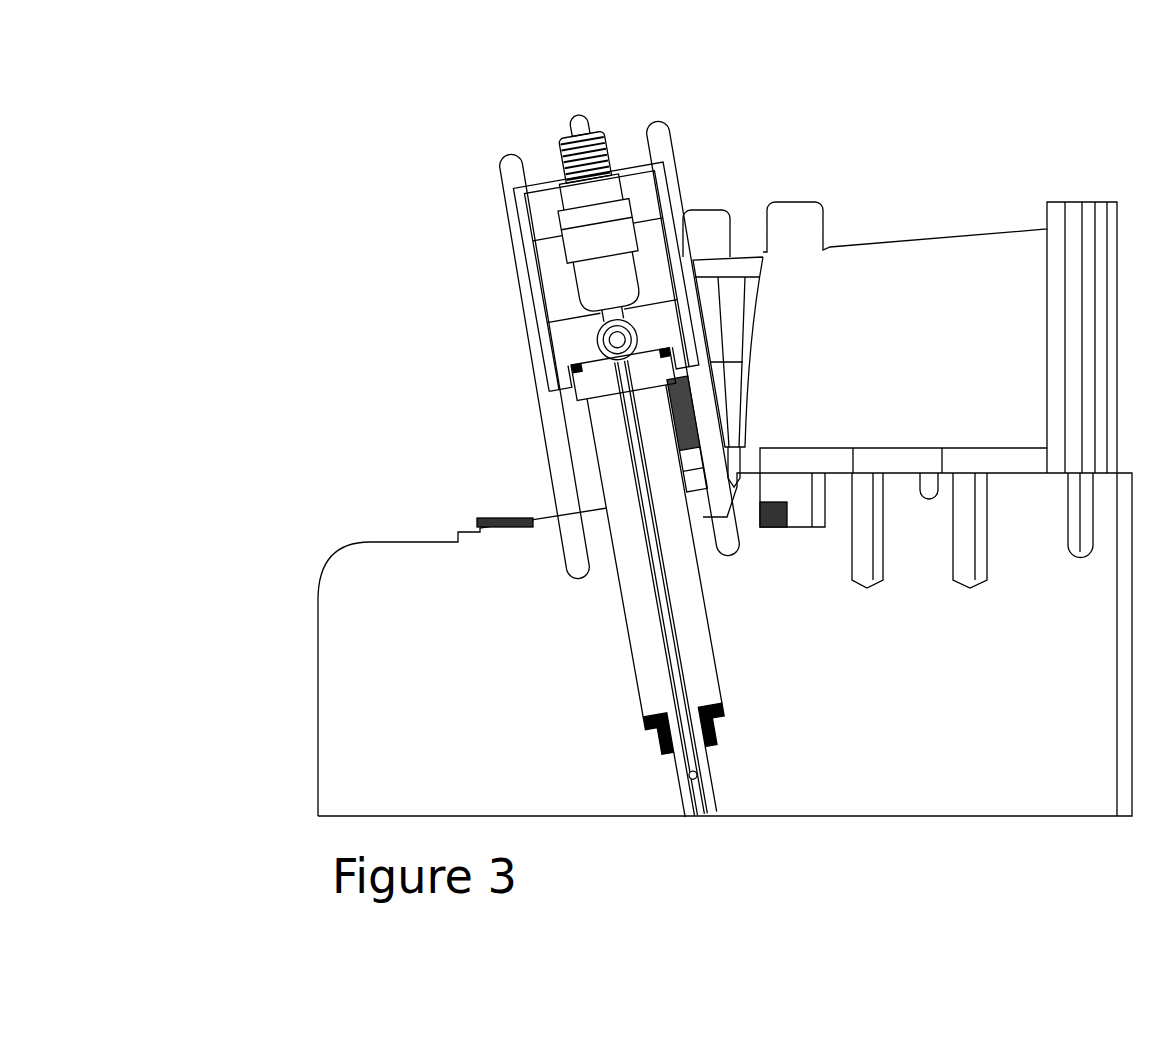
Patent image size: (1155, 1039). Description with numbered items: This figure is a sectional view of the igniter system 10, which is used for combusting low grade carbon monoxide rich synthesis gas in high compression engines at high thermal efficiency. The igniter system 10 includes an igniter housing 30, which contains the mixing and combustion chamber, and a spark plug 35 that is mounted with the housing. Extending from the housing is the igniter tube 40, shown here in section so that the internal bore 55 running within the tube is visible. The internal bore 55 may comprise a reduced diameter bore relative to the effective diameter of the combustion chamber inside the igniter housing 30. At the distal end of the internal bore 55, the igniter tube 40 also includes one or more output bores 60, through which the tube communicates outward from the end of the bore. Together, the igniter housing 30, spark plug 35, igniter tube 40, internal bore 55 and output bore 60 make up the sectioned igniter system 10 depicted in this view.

The igniter system 10 is at (359, 144).
The igniter housing 30 is at (534, 268).
The spark plug 35 is at (623, 131).
The igniter tube 40 is at (595, 533).
The internal bore 55 is at (622, 496).
The output bore 60 is at (714, 786).